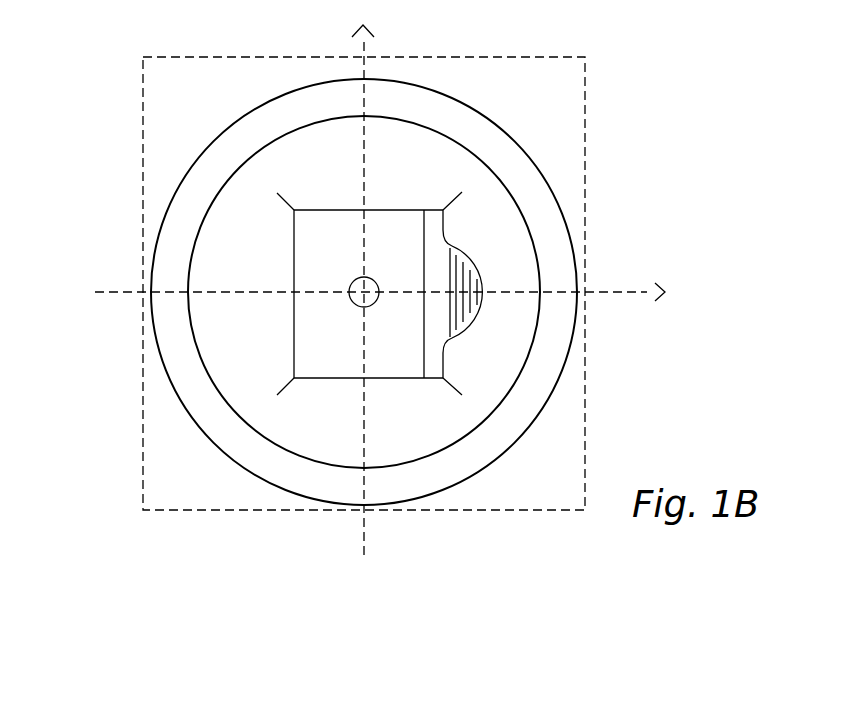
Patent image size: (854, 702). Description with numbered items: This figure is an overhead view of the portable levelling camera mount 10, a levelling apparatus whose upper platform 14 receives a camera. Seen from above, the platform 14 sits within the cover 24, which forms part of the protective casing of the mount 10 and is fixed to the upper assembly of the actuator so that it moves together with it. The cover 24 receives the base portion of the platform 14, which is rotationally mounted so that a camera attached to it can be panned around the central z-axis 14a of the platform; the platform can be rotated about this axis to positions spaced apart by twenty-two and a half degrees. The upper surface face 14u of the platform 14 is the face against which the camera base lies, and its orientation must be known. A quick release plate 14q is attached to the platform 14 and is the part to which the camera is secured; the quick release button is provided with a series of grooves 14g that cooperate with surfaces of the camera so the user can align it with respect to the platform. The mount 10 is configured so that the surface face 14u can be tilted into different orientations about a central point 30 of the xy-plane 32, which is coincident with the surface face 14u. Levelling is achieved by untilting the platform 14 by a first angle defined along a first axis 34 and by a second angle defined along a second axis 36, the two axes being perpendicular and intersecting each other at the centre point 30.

The portable levelling camera mount 10 is at (510, 90).
The upper platform 14 is at (452, 168).
The central z-axis 14a is at (376, 300).
The grooves 14g is at (470, 278).
The quick release plate 14q is at (313, 343).
The upper surface face 14u is at (268, 263).
The cover 24 is at (178, 241).
The central point 30 is at (350, 287).
The xy-plane 32 is at (203, 473).
The first axis 34 is at (640, 294).
The second axis 36 is at (362, 48).